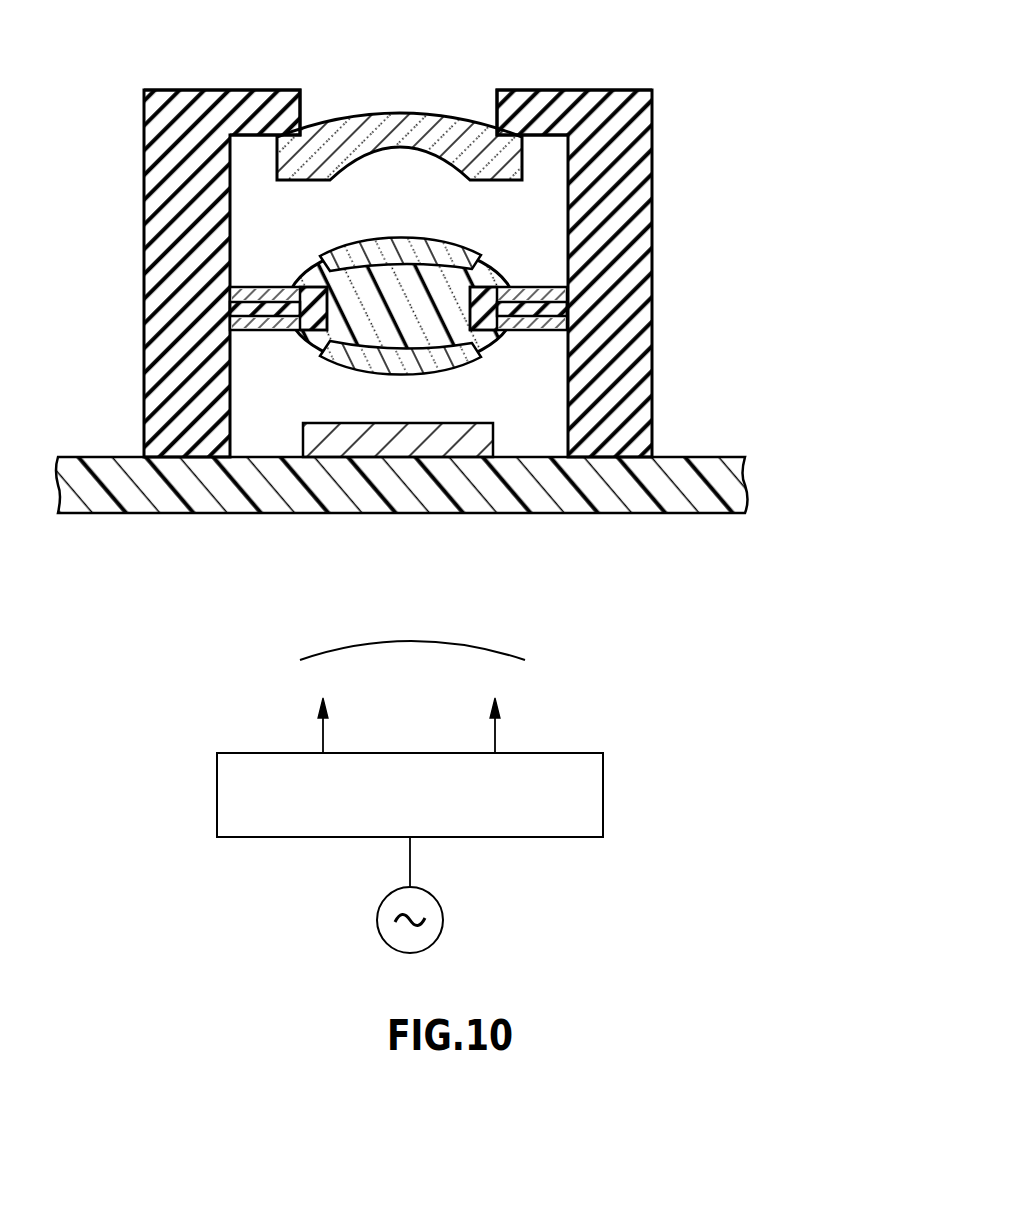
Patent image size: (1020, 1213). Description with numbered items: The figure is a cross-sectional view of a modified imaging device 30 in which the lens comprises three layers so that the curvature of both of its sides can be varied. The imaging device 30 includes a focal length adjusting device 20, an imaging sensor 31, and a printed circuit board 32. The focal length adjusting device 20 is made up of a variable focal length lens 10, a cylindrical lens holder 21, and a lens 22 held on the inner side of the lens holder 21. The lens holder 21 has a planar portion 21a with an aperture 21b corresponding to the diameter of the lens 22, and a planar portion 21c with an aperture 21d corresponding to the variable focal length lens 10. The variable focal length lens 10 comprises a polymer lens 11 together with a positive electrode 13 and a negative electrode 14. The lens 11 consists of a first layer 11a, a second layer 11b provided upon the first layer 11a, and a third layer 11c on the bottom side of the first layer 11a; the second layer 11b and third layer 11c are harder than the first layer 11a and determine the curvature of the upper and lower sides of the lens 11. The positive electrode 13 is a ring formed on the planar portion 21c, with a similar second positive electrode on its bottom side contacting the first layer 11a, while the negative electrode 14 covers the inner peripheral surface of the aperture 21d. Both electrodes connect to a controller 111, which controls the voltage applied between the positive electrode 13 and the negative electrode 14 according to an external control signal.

The variable focal length lens 10 is at (755, 138).
The lens 11 is at (521, 256).
The first layer 11a is at (427, 360).
The second layer 11b is at (458, 250).
The third layer 11c is at (470, 345).
The positive electrode 13 is at (512, 288).
The negative electrode 14 is at (505, 322).
The focal length adjusting device 20 is at (798, 88).
The lens holder 21 is at (170, 143).
The planar portion 21a is at (260, 97).
The aperture 21b is at (497, 117).
The planar portion 21c is at (237, 305).
The aperture 21d is at (323, 287).
The lens 22 is at (380, 123).
The imaging device 30 is at (845, 88).
The imaging sensor 31 is at (347, 442).
The printed circuit board 32 is at (175, 497).
The controller 111 is at (215, 792).